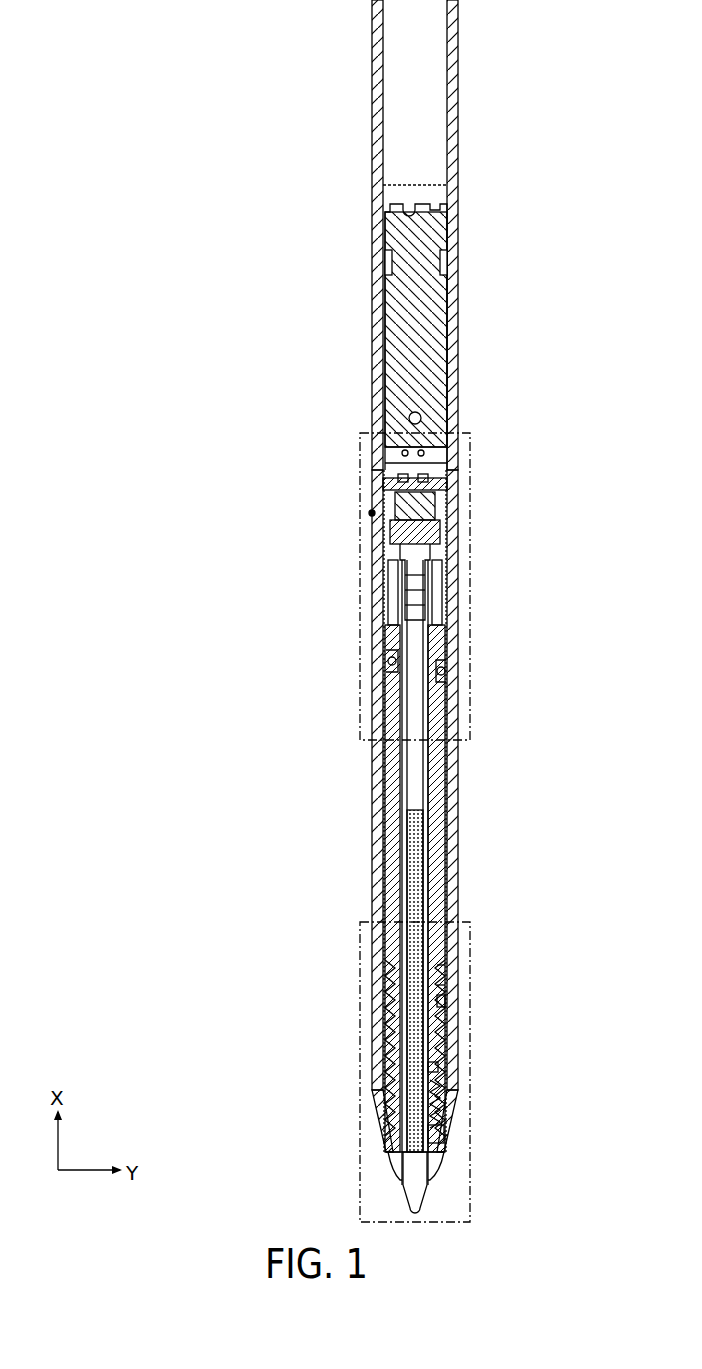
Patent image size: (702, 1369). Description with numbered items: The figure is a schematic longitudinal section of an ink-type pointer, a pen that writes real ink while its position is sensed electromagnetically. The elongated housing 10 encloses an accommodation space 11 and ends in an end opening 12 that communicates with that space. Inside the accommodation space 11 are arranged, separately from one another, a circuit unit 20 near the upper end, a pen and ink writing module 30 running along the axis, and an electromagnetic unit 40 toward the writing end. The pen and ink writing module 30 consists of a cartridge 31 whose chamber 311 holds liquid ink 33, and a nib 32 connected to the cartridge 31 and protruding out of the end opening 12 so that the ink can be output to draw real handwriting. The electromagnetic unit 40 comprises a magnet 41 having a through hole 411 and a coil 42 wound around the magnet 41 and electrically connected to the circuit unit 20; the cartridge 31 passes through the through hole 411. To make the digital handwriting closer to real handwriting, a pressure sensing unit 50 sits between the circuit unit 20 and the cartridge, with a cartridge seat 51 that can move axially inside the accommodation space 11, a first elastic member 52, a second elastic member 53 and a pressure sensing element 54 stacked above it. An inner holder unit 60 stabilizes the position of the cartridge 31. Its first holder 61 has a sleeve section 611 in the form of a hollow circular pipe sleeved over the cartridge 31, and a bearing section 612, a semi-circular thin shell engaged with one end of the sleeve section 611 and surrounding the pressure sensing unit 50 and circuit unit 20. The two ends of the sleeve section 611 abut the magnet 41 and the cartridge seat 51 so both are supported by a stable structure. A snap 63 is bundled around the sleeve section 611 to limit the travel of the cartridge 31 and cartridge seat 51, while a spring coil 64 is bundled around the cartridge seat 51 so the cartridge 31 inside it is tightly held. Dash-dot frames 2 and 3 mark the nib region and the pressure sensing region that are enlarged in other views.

The tip region 2 is at (360, 960).
The pressing mechanism region 3 is at (360, 478).
The housing 10 is at (372, 806).
The accommodation space 11 is at (447, 953).
The end opening 12 is at (420, 1190).
The circuit unit 20 is at (450, 342).
The pen and ink writing module 30 is at (525, 1065).
The cartridge 31 is at (440, 1128).
The chamber 311 is at (440, 1068).
The nib 32 is at (430, 1156).
The liquid ink 33 is at (440, 1100).
The electromagnetic unit 40 is at (522, 970).
The magnet 41 is at (445, 1034).
The through hole 411 is at (445, 977).
The coil 42 is at (445, 1003).
The pressure sensing unit 50 is at (515, 480).
The cartridge seat 51 is at (428, 560).
The first elastic member 52 is at (436, 510).
The second elastic member 53 is at (440, 535).
The pressure sensing element 54 is at (440, 486).
The inner holder unit 60 is at (369, 513).
The first holder 61 is at (303, 590).
The sleeve section 611 is at (392, 655).
The bearing section 612 is at (394, 600).
The snap 63 is at (446, 674).
The spring coil 64 is at (440, 607).